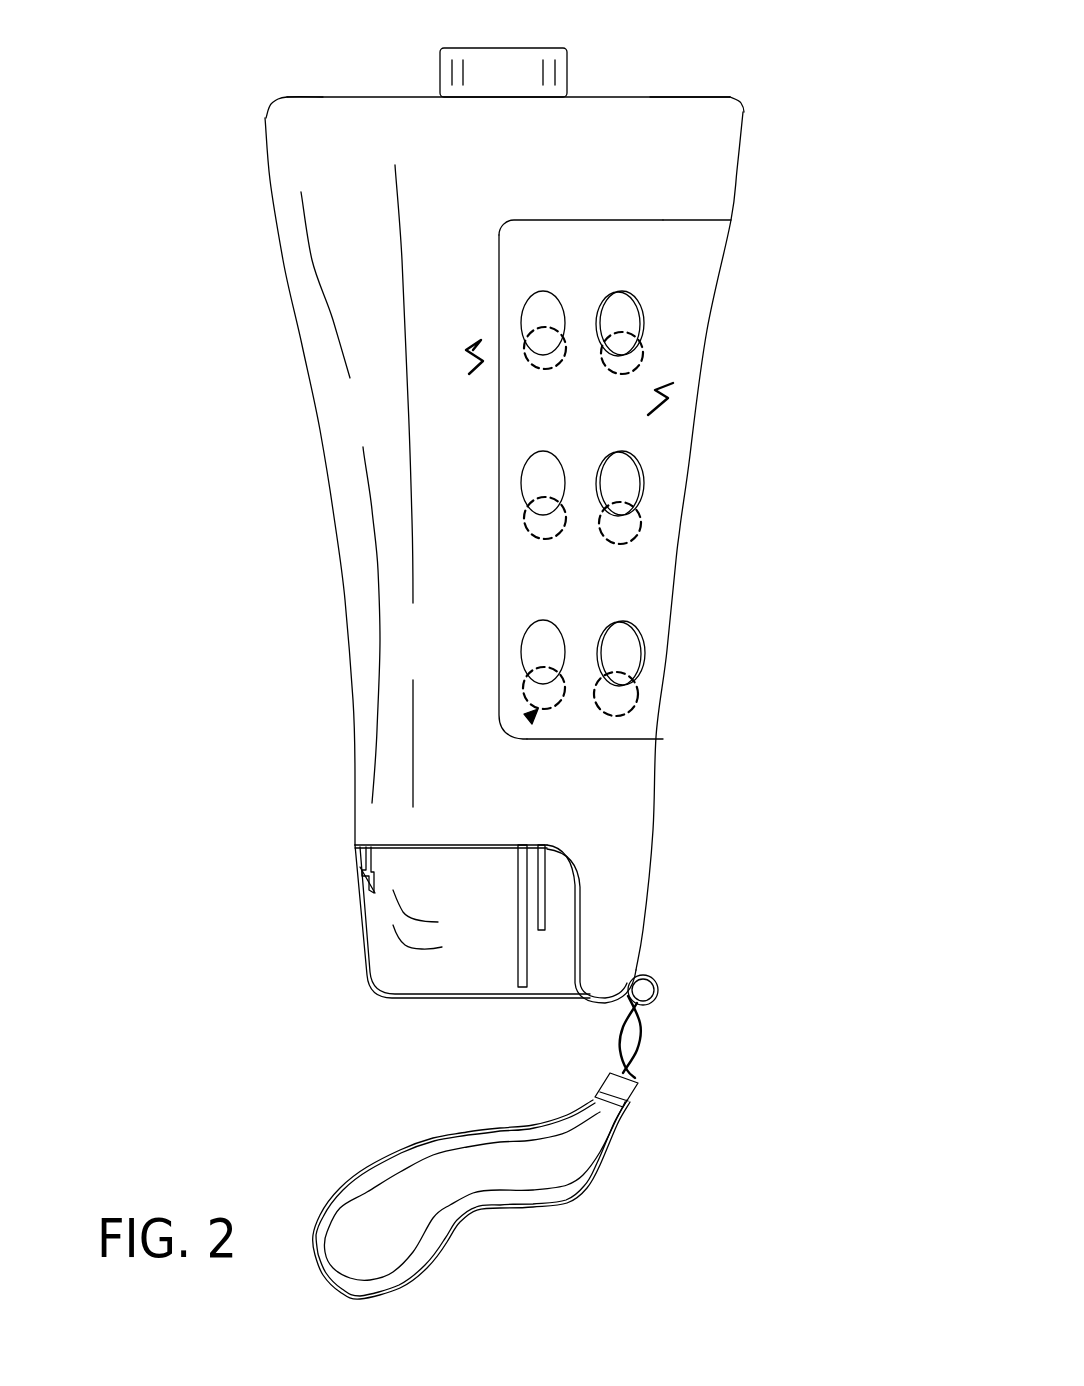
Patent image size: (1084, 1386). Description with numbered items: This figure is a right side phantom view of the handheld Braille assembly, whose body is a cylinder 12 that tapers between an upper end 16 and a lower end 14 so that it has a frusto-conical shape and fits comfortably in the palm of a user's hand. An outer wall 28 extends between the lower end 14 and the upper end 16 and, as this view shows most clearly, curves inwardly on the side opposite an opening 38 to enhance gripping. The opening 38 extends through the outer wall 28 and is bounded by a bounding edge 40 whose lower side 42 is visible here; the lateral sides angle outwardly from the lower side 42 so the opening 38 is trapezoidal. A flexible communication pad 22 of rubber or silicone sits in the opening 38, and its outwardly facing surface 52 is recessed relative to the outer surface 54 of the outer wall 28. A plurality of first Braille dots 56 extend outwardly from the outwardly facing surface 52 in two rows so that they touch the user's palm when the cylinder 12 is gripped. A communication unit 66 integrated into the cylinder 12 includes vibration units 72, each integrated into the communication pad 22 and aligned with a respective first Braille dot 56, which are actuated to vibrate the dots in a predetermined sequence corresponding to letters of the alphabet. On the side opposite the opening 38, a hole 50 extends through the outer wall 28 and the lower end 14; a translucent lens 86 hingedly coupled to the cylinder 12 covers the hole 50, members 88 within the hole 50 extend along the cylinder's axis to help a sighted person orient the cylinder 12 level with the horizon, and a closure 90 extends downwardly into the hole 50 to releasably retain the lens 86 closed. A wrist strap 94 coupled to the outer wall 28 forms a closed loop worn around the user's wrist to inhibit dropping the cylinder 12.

The cylinder 12 is at (656, 832).
The lower end 14 is at (597, 1000).
The upper end 16 is at (323, 97).
The communication pad 22 is at (647, 557).
The outer wall 28 is at (692, 140).
The opening 38 is at (690, 222).
The bounding edge 40 is at (663, 220).
The lower side 42 is at (625, 738).
The hole 50 is at (380, 993).
The outwardly facing surface 52 is at (667, 397).
The outer surface 54 is at (473, 350).
The first Braille dots 56 is at (543, 303).
The communication unit 66 is at (530, 716).
The vibration units 72 is at (642, 345).
The lens 86 is at (426, 945).
The members 88 is at (543, 930).
The closure 90 is at (373, 857).
The wrist strap 94 is at (498, 1215).